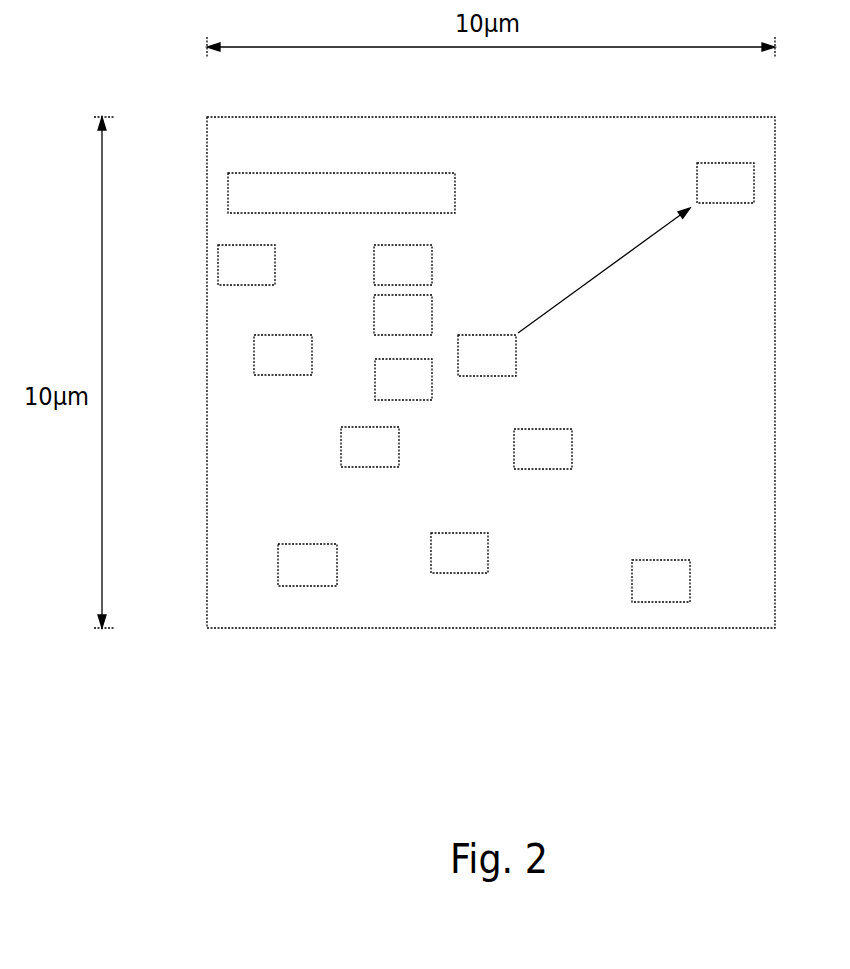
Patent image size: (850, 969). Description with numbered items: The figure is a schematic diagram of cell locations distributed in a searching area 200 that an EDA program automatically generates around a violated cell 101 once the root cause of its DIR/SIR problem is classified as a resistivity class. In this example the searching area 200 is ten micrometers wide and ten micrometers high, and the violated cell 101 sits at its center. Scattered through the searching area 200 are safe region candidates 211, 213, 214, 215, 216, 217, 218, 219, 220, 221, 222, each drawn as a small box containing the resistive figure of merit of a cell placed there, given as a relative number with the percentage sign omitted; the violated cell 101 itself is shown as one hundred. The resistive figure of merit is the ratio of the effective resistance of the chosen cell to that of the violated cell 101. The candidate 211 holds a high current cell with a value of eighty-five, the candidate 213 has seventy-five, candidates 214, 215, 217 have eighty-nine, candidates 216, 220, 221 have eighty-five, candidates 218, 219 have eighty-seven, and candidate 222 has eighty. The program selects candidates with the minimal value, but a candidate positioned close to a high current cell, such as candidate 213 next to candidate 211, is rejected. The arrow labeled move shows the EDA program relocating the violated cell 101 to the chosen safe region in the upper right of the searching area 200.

The searching area 200 is at (207, 148).
The safe region candidate 211 is at (228, 190).
The safe region candidate 213 is at (218, 277).
The safe region candidate 214 is at (432, 254).
The safe region candidate 215 is at (432, 304).
The safe region candidate 216 is at (254, 355).
The safe region candidate 217 is at (432, 388).
The safe region candidate 218 is at (341, 445).
The safe region candidate 219 is at (514, 462).
The safe region candidate 220 is at (312, 586).
The safe region candidate 221 is at (462, 573).
The safe region candidate 222 is at (664, 602).
The violated cell 101 is at (516, 357).